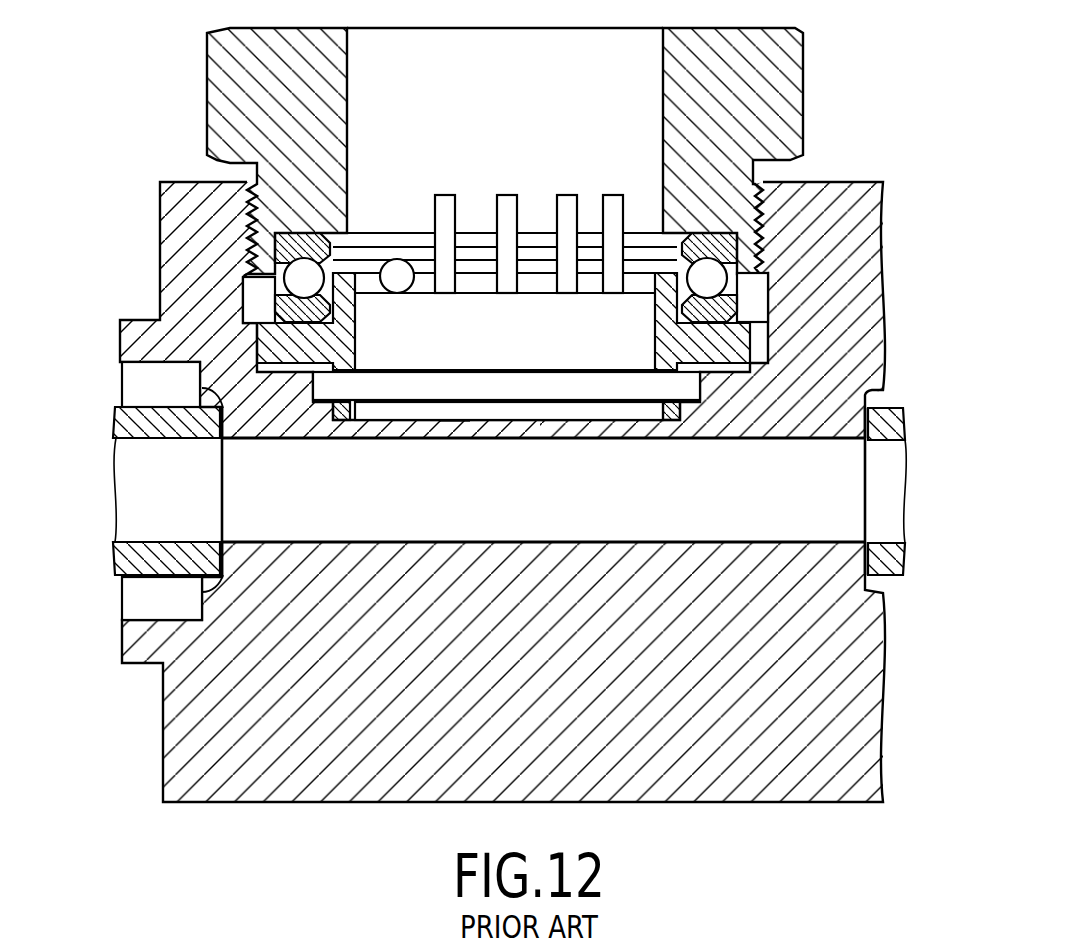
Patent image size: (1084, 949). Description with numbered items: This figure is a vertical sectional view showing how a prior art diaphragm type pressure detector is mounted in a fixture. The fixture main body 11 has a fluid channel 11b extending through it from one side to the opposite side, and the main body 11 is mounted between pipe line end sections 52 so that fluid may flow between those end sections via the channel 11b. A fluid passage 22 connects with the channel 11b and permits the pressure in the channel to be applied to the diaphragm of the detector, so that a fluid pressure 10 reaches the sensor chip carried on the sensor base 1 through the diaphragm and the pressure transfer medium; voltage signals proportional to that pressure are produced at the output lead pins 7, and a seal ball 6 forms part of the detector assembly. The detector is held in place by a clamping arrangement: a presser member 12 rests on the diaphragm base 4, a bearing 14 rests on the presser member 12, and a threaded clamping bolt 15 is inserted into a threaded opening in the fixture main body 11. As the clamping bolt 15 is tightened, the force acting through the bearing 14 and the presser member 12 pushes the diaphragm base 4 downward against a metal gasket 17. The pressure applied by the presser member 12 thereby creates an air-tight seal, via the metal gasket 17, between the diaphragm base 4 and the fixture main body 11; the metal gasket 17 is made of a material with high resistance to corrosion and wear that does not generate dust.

The sensor base 1 is at (484, 280).
The diaphragm base 4 is at (404, 390).
The seal ball 6 is at (397, 272).
The output lead pins 7 is at (568, 200).
The fluid pressure 10 is at (508, 418).
The fixture main body 11 is at (833, 732).
The fluid channel 11b is at (825, 442).
The presser member 12 is at (733, 347).
The bearing 14 is at (713, 282).
The clamping bolt 15 is at (755, 100).
The metal gasket 17 is at (334, 418).
The fluid passage 22 is at (454, 428).
The pipe line end sections 52 is at (140, 406).